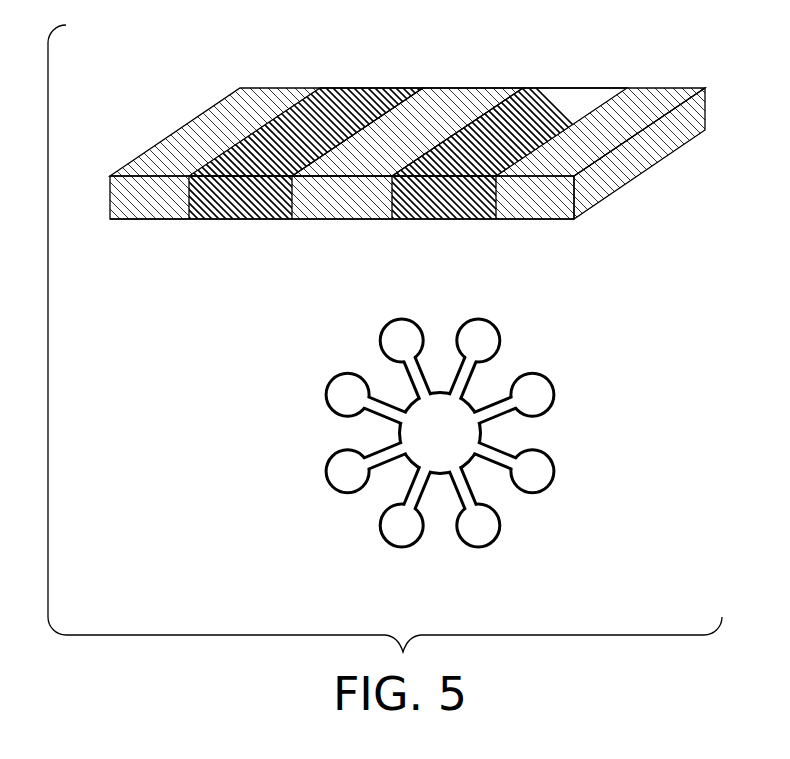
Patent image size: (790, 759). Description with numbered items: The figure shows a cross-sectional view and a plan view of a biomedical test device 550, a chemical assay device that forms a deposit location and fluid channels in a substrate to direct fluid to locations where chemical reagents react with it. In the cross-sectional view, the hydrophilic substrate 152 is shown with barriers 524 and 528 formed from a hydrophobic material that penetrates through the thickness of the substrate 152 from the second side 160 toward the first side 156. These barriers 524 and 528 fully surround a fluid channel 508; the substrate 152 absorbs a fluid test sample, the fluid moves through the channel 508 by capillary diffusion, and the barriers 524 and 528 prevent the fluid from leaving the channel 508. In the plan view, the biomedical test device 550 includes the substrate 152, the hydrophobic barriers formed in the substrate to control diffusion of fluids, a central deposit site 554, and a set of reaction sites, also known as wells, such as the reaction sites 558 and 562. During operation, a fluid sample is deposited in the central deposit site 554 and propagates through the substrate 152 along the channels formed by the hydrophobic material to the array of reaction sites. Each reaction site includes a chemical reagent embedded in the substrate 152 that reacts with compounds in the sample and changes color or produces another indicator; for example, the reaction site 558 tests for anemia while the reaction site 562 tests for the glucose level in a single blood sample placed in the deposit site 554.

The substrate 152 is at (110, 198).
The first side 156 is at (148, 223).
The second side 160 is at (183, 138).
The barrier 524 is at (347, 103).
The fluid channel 508 is at (450, 102).
The barrier 528 is at (563, 102).
The biomedical test device 550 is at (401, 567).
The deposit site 554 is at (455, 432).
The reaction site 558 is at (475, 538).
The reaction site 562 is at (397, 330).